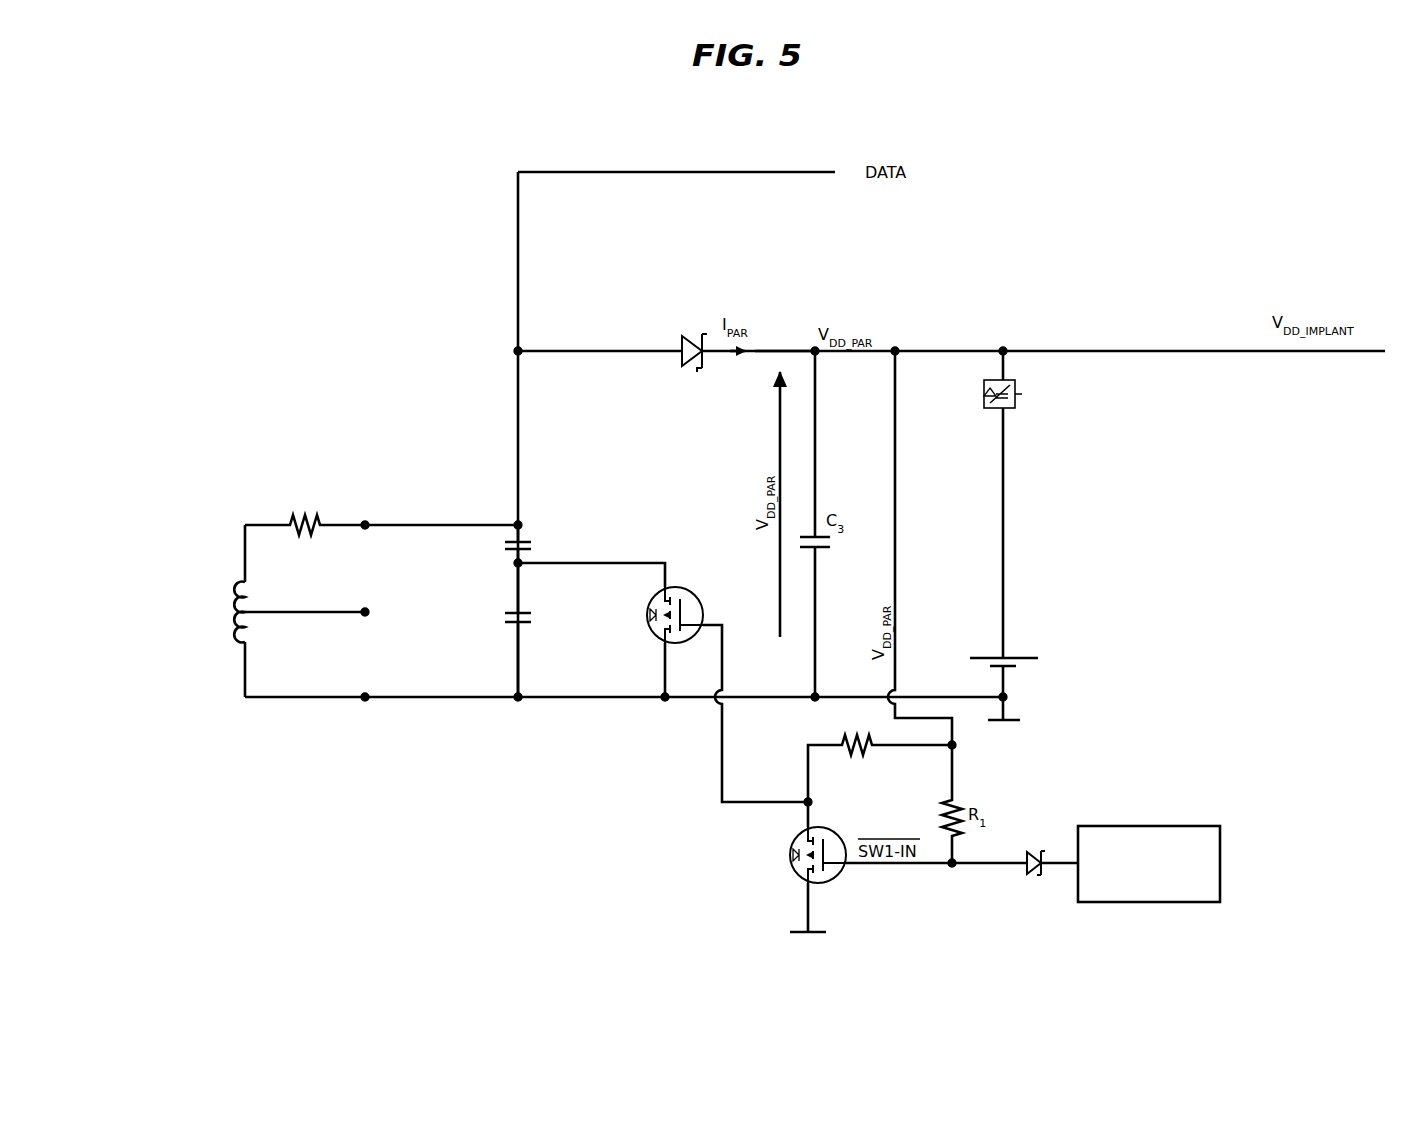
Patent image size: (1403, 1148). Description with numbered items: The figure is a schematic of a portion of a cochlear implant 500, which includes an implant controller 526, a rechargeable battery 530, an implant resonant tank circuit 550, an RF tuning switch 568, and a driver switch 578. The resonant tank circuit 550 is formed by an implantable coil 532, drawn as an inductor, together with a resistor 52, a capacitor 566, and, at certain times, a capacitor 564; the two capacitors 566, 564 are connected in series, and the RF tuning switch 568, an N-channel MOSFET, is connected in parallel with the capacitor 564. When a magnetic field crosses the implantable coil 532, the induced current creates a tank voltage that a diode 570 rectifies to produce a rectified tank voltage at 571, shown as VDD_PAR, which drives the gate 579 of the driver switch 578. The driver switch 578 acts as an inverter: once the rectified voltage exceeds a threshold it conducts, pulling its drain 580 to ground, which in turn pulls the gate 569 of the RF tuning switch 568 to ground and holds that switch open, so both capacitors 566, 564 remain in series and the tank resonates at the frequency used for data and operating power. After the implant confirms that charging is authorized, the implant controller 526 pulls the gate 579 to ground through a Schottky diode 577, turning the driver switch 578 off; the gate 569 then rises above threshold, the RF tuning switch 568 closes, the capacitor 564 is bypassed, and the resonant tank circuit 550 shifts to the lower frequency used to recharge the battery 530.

The cochlear implant 500 is at (518, 887).
The implant resonant tank circuit 550 is at (418, 408).
The resistor R2 52 is at (293, 523).
The implantable coil 532 is at (236, 640).
The capacitor 566 is at (530, 543).
The capacitor 564 is at (530, 626).
The RF tuning switch 568 is at (685, 553).
The gate of MOSFET M1 569 is at (706, 598).
The diode 570 is at (684, 367).
The rectified tank voltage node 571 is at (768, 349).
The rechargeable battery 530 is at (1066, 648).
The drain of MOSFET M2 580 is at (801, 789).
The gate of MOSFET M2 579 is at (843, 822).
The driver switch 578 is at (845, 905).
The Schottky diode 577 is at (1027, 871).
The implant controller 526 is at (1222, 858).